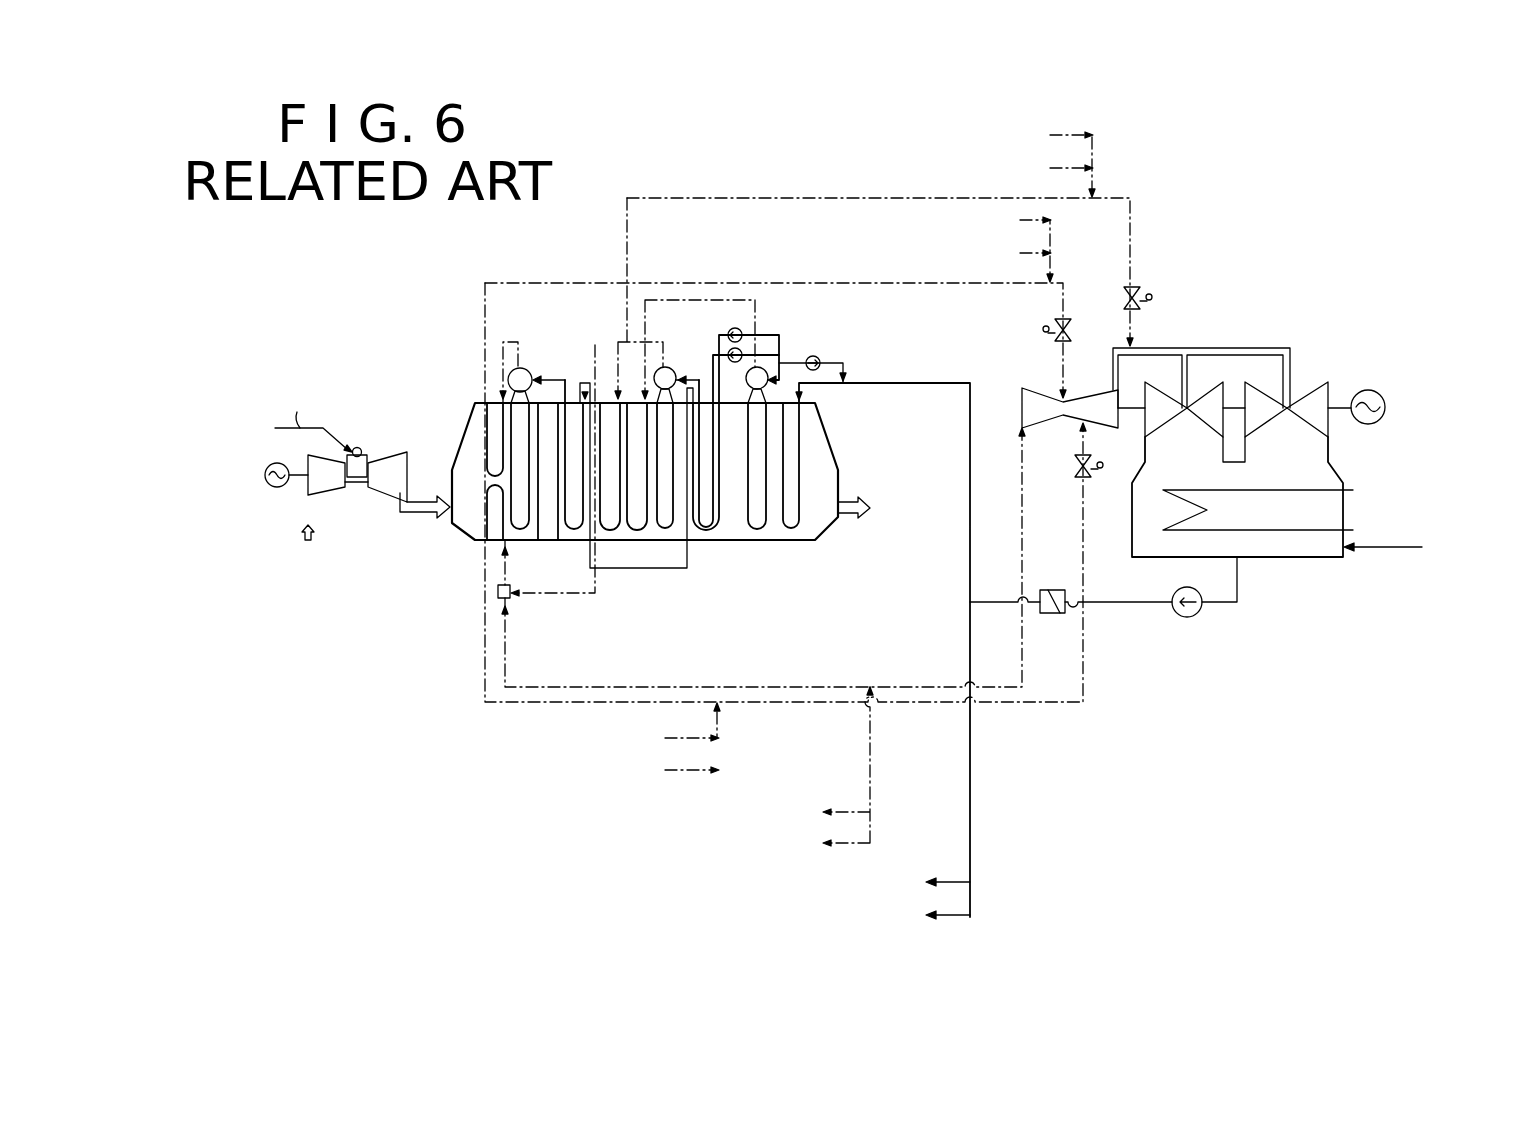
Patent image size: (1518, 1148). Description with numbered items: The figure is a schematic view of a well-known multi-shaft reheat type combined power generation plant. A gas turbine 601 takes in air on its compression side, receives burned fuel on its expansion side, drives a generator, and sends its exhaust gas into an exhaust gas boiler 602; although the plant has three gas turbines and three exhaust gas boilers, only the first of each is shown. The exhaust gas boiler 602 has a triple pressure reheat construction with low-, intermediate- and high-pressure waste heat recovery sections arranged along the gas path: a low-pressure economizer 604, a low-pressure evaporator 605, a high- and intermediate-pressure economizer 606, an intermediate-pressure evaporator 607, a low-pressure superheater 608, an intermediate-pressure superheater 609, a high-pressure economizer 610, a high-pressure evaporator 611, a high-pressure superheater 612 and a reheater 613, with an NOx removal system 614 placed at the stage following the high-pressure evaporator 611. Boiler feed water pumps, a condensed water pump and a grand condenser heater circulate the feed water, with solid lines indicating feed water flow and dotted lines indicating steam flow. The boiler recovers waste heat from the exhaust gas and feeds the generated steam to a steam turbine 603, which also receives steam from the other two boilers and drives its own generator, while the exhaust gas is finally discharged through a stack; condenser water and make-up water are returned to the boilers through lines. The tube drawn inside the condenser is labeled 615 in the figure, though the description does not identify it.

The gas turbine 601 is at (327, 453).
The exhaust gas boiler 602 is at (712, 525).
The steam turbine 603 is at (1257, 455).
The low-pressure economizer 604 is at (797, 423).
The low-pressure evaporator 605 is at (762, 522).
The high- and intermediate-pressure economizer 606 is at (708, 525).
The intermediate-pressure evaporator 607 is at (665, 530).
The low-pressure superheater 608 is at (640, 530).
The intermediate-pressure superheater 609 is at (610, 408).
The high-pressure economizer 610 is at (573, 530).
The high-pressure evaporator 611 is at (520, 530).
The high-pressure superheater 612 is at (473, 418).
The reheater 613 is at (473, 533).
The NOx removal system 614 is at (550, 408).
The condenser tube 615 is at (1170, 504).